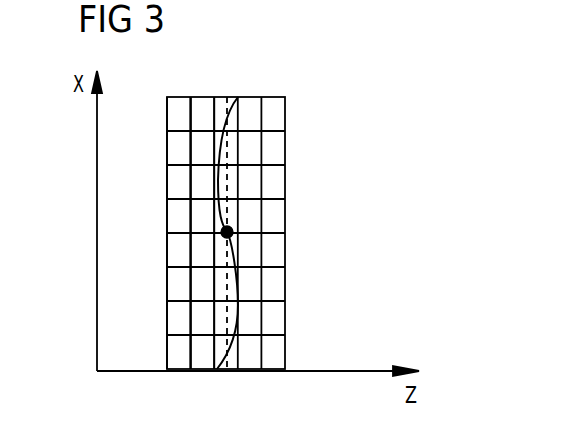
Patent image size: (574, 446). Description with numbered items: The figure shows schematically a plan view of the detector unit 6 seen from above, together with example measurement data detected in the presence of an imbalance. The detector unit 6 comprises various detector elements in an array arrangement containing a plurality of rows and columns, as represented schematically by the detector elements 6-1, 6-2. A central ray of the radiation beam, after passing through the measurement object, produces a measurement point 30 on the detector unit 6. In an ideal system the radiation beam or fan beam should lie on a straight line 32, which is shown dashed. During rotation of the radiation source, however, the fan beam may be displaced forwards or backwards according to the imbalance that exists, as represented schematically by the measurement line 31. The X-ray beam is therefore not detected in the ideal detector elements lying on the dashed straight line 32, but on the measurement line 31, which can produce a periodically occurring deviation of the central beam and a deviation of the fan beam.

The detector unit 6 is at (289, 147).
The detector element 6-1 is at (177, 108).
The detector element 6-2 is at (201, 108).
The measurement point 30 is at (233, 227).
The measurement line 31 is at (234, 250).
The straight line 32 is at (228, 181).